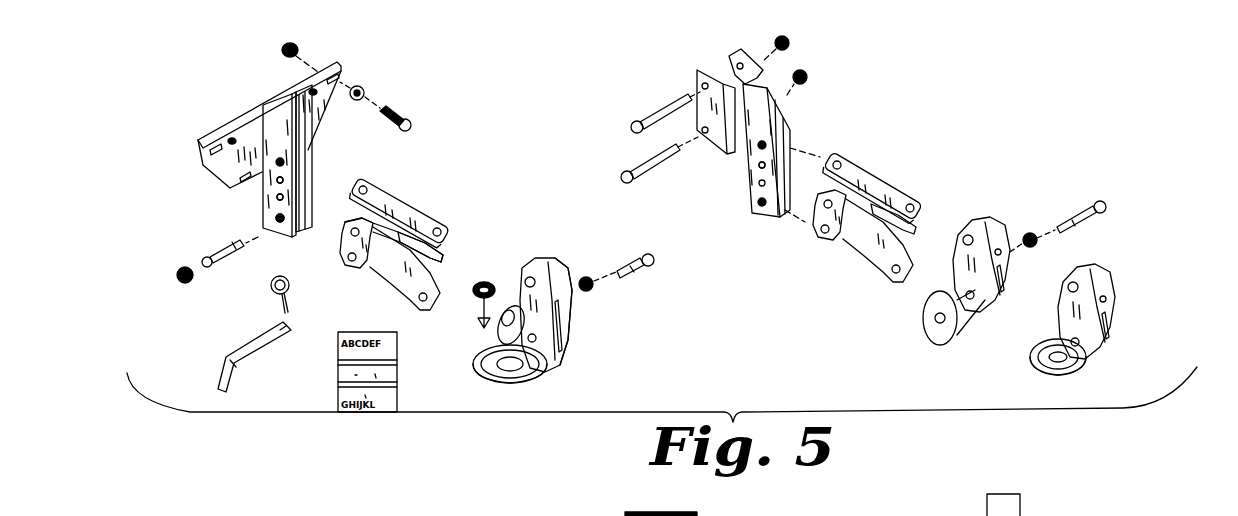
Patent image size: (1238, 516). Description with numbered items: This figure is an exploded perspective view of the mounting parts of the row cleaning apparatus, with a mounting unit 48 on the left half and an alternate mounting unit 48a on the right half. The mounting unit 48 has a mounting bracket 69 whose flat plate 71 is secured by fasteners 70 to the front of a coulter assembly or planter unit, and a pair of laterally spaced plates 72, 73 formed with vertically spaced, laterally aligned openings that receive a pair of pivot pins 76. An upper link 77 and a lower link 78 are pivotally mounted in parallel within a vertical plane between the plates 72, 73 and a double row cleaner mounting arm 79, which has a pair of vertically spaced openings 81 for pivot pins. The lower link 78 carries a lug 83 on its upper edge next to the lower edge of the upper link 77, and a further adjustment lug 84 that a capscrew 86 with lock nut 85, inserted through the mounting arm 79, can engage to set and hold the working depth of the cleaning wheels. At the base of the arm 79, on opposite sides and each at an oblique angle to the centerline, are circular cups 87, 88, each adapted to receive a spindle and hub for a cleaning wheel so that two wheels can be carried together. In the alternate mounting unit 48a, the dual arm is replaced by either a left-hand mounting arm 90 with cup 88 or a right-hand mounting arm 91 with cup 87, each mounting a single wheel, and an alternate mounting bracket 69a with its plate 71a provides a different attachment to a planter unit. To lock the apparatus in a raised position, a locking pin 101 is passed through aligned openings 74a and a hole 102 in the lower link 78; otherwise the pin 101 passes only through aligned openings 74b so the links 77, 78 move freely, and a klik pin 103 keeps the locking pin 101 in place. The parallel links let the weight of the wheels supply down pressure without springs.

The mounting unit 48 is at (467, 135).
The alternate mounting unit 48a is at (1015, 106).
The mounting bracket 69 is at (191, 159).
The alternate mounting bracket 69a is at (806, 102).
The fasteners 70 is at (402, 114).
The flat plate 71 is at (198, 140).
The flat plate of alternate mounting bracket 71a is at (697, 70).
The plate 72 is at (300, 131).
The plate 73 is at (277, 181).
The aligned openings 74a is at (270, 229).
The aligned openings 74b is at (278, 198).
The pivot pins 76 is at (228, 262).
The upper link 77 is at (423, 203).
The lower link 78 is at (400, 288).
The double row cleaner mounting arm 79 is at (563, 270).
The openings 81 is at (527, 270).
The lug 83 is at (373, 268).
The adjustment lug 84 is at (400, 258).
The lock nut 85 is at (591, 293).
The capscrew 86 is at (645, 278).
The circular cup 87 is at (488, 383).
The circular cup 88 is at (503, 330).
The left-hand mounting arm 90 is at (1017, 230).
The right-hand mounting arm 91 is at (1113, 303).
The locking pin 101 is at (230, 358).
The hole 102 is at (350, 230).
The klik pin 103 is at (271, 294).